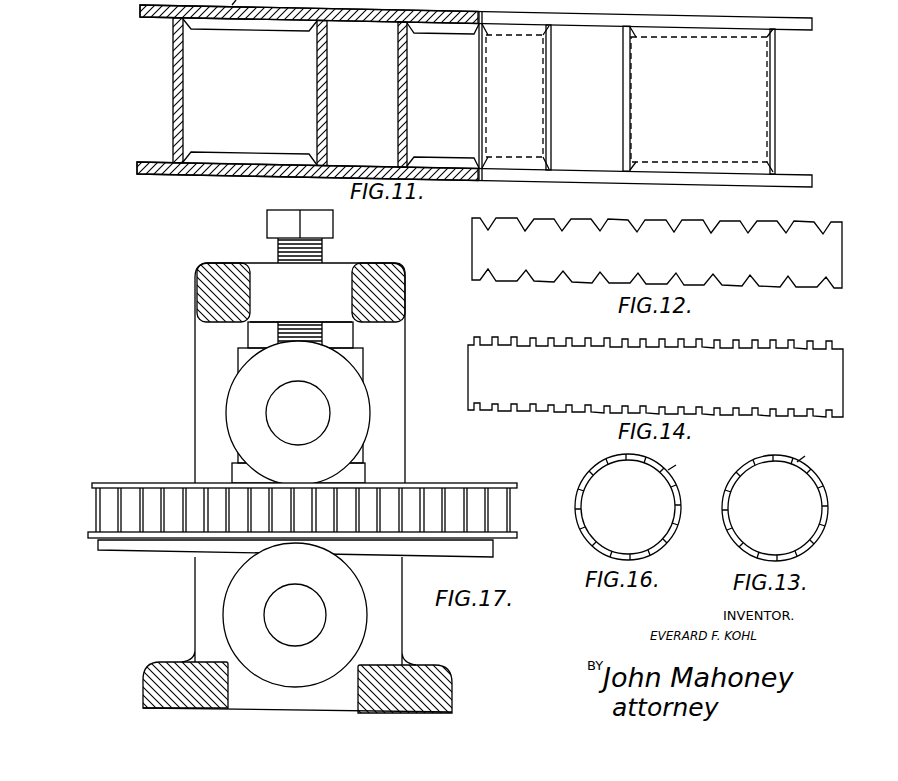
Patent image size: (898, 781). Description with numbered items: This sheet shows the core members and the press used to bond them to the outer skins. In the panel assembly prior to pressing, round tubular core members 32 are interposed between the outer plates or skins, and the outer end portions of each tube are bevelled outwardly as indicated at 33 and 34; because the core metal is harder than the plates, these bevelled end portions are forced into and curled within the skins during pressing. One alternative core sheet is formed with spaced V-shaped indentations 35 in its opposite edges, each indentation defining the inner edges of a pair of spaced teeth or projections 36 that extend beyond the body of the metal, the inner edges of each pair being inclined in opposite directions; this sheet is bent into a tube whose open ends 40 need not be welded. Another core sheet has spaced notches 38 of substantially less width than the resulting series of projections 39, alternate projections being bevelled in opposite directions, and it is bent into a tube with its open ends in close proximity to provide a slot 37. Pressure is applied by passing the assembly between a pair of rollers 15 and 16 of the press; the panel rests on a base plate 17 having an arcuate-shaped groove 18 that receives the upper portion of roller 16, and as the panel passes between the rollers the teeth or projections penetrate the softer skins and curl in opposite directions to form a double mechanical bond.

In FIG. 17, the roller 15 is at (226, 407).
In FIG. 17, the roller 16 is at (222, 608).
In FIG. 17, the base plate 17 is at (143, 552).
In FIG. 17, the arcuate-shaped groove 18 is at (327, 545).
In FIG. 11, the tubular core member 32 is at (776, 100).
In FIG. 11, the outwardly bevelled end portion 33 is at (183, 22).
In FIG. 11, the outwardly bevelled end portion 34 is at (317, 161).
In FIG. 12, the V-shaped indentation 35 is at (489, 218).
In FIG. 16, the V-shaped indentation 35 is at (588, 473).
In FIG. 12, the teeth or projections 36 is at (590, 218).
In FIG. 16, the teeth or projections 36 is at (580, 491).
In FIG. 13, the slot 37 is at (797, 462).
In FIG. 14, the notch 38 is at (496, 337).
In FIG. 13, the notch 38 is at (727, 490).
In FIG. 14, the projection 39 is at (518, 337).
In FIG. 13, the projection 39 is at (731, 477).
In FIG. 16, the open ends of tube 40 is at (669, 478).